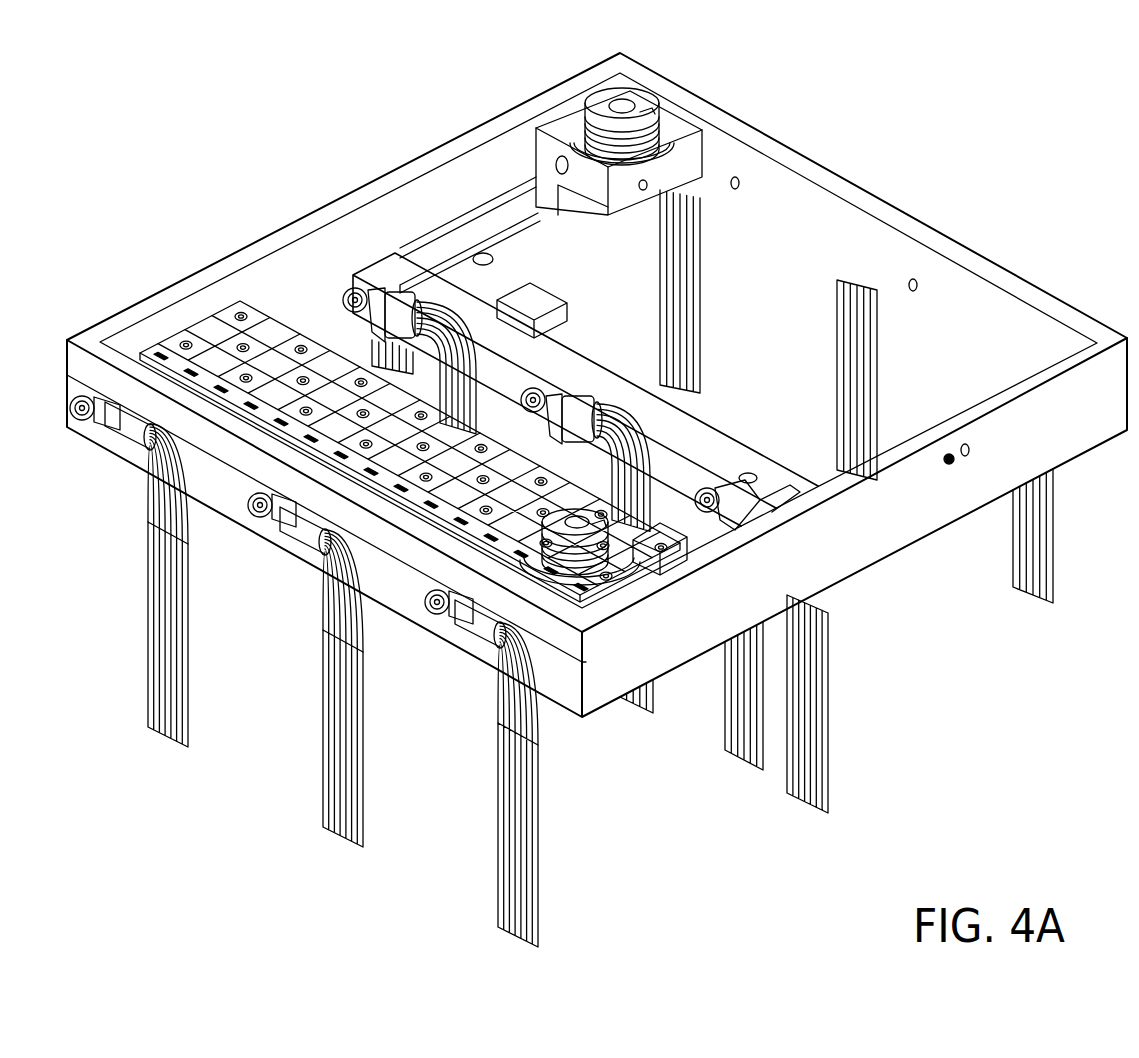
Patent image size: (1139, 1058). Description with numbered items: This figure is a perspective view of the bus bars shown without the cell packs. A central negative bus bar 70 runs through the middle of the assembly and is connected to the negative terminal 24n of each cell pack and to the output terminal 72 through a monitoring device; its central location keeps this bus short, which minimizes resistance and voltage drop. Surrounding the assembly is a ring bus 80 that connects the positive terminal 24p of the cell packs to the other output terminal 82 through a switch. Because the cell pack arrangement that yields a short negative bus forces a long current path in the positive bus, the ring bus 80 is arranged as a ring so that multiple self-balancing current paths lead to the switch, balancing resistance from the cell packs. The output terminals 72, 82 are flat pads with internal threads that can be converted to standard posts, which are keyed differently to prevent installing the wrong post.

The negative terminal 24n is at (398, 320).
The positive terminal 24p is at (120, 430).
The central negative bus bar 70 is at (518, 345).
The output terminal 72 is at (624, 105).
The ring bus 80 is at (1008, 328).
The output terminal 82 is at (588, 478).